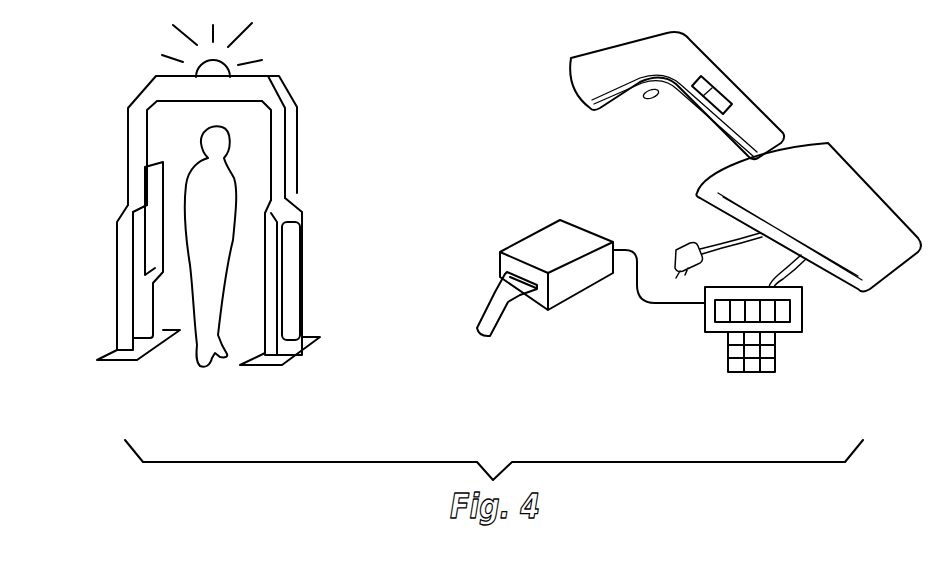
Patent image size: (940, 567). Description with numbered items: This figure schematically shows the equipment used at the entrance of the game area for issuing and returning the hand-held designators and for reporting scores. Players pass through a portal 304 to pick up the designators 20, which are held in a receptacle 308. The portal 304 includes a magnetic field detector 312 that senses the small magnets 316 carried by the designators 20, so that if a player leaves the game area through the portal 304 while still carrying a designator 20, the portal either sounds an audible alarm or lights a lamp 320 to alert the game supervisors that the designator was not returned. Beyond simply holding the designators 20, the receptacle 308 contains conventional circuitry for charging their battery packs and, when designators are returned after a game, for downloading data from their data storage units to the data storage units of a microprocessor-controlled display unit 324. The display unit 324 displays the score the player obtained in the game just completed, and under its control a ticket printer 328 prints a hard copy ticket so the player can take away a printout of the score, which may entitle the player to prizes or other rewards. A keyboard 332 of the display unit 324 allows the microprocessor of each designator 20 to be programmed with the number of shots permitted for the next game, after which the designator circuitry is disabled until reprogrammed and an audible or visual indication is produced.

The designator 20 is at (698, 58).
The portal 304 is at (128, 155).
The receptacle 308 is at (836, 167).
The magnetic field detector 312 is at (150, 196).
The magnet 316 is at (708, 95).
The lamp 320 is at (197, 67).
The display unit 324 is at (803, 315).
The ticket printer 328 is at (531, 236).
The keyboard 332 is at (775, 360).